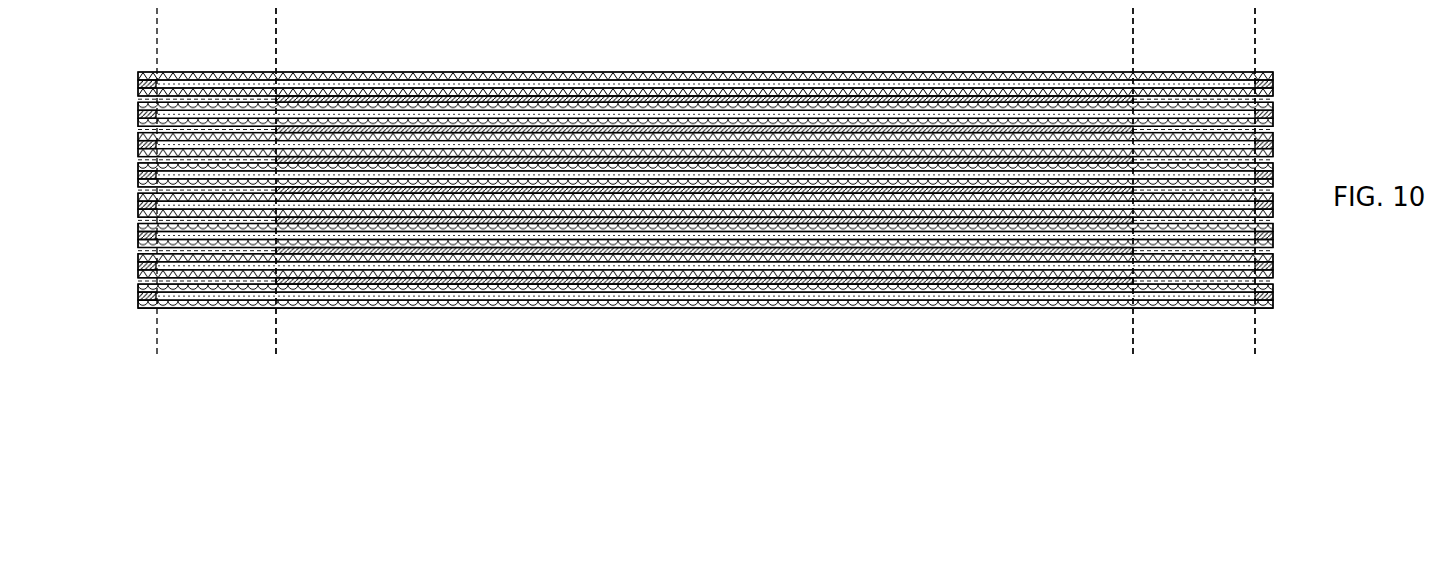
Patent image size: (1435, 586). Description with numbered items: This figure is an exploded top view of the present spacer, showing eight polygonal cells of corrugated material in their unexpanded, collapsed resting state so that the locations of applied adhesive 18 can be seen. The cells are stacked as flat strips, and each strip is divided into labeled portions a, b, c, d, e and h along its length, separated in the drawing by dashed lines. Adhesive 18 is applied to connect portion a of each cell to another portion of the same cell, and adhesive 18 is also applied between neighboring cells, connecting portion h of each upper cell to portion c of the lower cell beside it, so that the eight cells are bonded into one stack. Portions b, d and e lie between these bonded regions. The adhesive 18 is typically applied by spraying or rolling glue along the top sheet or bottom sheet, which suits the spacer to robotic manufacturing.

The adhesive 18 is at (131, 133).
The portion a is at (140, 62).
The portion b is at (160, 62).
The portion c is at (398, 62).
The portion d is at (1133, 62).
The portion e is at (1255, 62).
The portion h is at (360, 297).